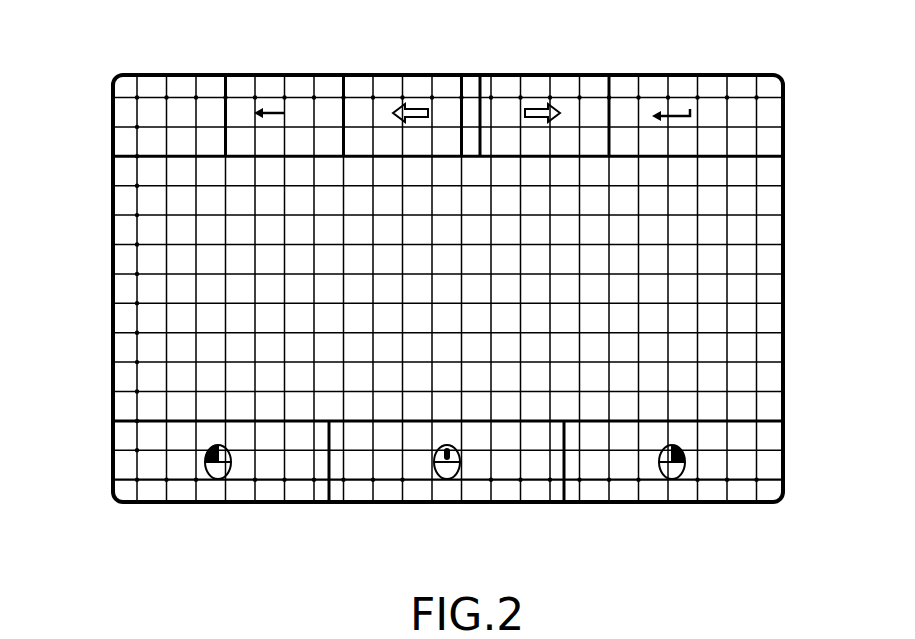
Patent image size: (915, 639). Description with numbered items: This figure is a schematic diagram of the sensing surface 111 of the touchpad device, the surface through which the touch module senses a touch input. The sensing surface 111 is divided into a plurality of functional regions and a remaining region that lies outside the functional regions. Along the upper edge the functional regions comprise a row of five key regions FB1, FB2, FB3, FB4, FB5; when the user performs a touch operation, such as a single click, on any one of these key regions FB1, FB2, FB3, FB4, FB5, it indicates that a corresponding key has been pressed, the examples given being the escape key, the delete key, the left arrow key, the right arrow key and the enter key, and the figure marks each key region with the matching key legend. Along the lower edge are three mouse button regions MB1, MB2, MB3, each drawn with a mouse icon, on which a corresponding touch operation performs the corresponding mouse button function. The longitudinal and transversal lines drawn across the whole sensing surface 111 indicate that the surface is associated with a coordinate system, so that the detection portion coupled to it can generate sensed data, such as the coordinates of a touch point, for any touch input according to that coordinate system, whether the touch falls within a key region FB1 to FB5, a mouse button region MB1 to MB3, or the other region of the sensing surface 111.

The sensing surface 111 is at (773, 73).
The key region FB1 is at (130, 91).
The key region FB2 is at (270, 93).
The key region FB3 is at (443, 93).
The key region FB4 is at (590, 93).
The key region FB5 is at (711, 93).
The mouse button region MB1 is at (131, 436).
The mouse button region MB2 is at (497, 483).
The mouse button region MB3 is at (764, 443).